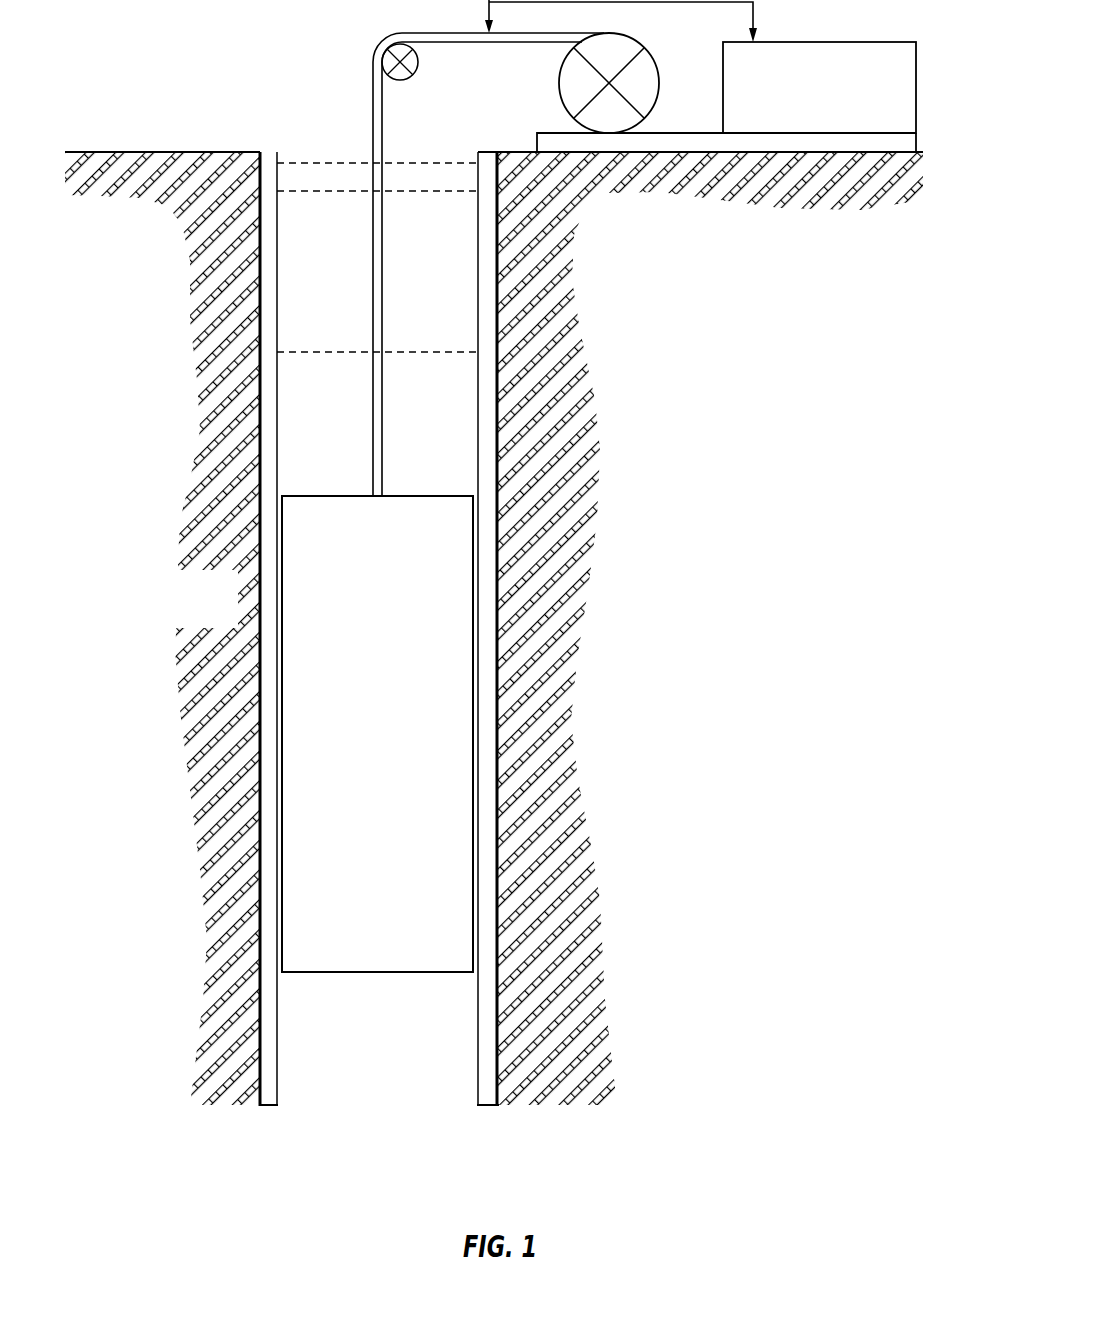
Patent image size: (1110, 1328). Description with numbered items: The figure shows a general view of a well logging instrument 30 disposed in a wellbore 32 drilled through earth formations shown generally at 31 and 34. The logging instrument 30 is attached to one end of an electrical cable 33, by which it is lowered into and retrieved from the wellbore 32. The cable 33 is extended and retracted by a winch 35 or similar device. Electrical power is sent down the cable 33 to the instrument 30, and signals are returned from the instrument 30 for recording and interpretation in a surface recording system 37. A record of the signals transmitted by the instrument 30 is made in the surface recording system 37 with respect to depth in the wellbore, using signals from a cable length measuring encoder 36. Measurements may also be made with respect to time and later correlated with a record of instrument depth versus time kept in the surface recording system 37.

The logging instrument 30 is at (377, 716).
The earth formations 31 is at (323, 612).
The wellbore 32 is at (377, 271).
The electrical cable 33 is at (377, 147).
The earth formations 34 is at (139, 503).
The winch 35 is at (626, 68).
The cable length measuring encoder 36 is at (425, 40).
The surface recording system 37 is at (819, 69).